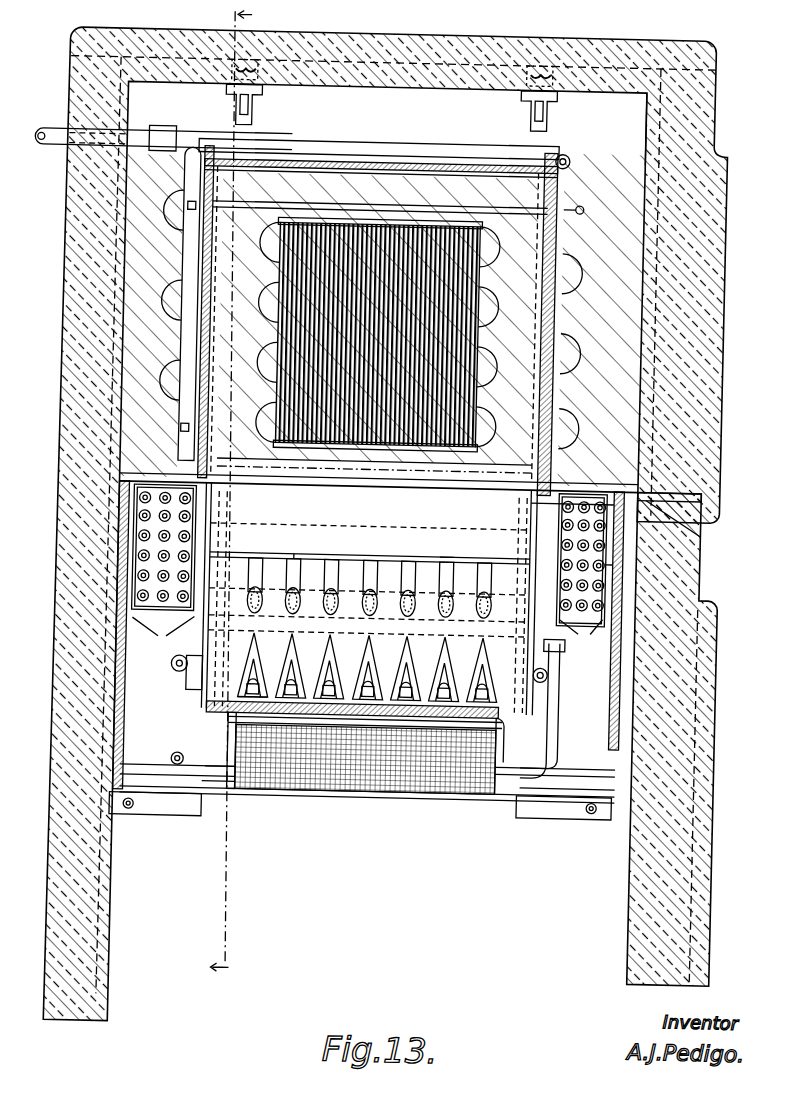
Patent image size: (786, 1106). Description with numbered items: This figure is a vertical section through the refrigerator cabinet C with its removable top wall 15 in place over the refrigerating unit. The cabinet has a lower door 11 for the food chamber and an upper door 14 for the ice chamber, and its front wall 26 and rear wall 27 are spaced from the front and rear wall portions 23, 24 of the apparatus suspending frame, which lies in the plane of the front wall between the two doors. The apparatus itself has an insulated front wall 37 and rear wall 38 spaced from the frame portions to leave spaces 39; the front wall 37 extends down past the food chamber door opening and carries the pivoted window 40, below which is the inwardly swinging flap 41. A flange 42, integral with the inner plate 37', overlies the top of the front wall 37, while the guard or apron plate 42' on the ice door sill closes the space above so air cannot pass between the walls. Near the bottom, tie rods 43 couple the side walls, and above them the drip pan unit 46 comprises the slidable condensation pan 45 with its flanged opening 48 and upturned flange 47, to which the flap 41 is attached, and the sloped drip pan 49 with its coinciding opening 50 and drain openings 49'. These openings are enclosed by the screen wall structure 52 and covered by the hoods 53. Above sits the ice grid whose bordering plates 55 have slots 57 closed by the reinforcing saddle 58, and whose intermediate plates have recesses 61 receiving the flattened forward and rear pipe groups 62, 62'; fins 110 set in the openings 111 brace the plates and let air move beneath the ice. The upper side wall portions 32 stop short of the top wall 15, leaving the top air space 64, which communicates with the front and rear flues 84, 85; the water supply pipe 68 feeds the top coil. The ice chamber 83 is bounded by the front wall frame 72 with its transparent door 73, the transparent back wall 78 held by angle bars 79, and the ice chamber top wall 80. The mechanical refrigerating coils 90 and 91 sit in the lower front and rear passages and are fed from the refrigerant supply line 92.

The door 11 is at (717, 878).
The door 14 is at (720, 334).
The top wall 15 is at (705, 51).
The front wall portion 23 is at (529, 515).
The rear wall portion 24 is at (292, 528).
The front wall 26 is at (687, 559).
The rear wall 27 is at (83, 420).
The upper portions of the side walls 32 is at (621, 168).
The front wall 37 is at (646, 562).
The inner plate 37' is at (687, 568).
The rear wall 38 is at (120, 578).
The spaces 39 is at (367, 637).
The window 40 is at (615, 680).
The flap 41 is at (627, 757).
The flange 42 is at (697, 488).
The guard or apron plate 42' is at (704, 520).
The tie rods 43 is at (146, 816).
The condensation pan 45 is at (526, 797).
The drip pan unit 46 is at (155, 775).
The upturned flange 47 is at (626, 795).
The flanged opening 48 is at (491, 798).
The drip pan 49 is at (214, 812).
The openings 49' is at (474, 799).
The flanged opening 50 is at (251, 798).
The screen wall structure 52 is at (340, 792).
The hoods 53 is at (434, 719).
The outer bordering plates 55 is at (425, 568).
The slots 57 is at (441, 569).
The reinforcing saddle 58 is at (352, 531).
The recesses 61 is at (364, 567).
The forward group of pipes 62 is at (384, 588).
The rear group of pipes 62' is at (292, 559).
The top air space or passage 64 is at (335, 106).
The water inflow or supply pipe 68 is at (34, 141).
The ice chamber front wall frame 72 is at (554, 168).
The door 73 is at (553, 228).
The ice chamber back wall 78 is at (193, 262).
The vertical angle bars 79 is at (187, 182).
The ice chamber top wall 80 is at (439, 164).
The chamber 83 is at (332, 211).
The front air space or flue 84 is at (609, 301).
The rear air space or flue 85 is at (143, 326).
The front coil 90 is at (589, 505).
The rear coil 91 is at (151, 543).
The refrigerant supply line 92 is at (184, 757).
The fins 110 is at (333, 669).
The openings 111 is at (292, 662).
The cabinet C is at (58, 493).